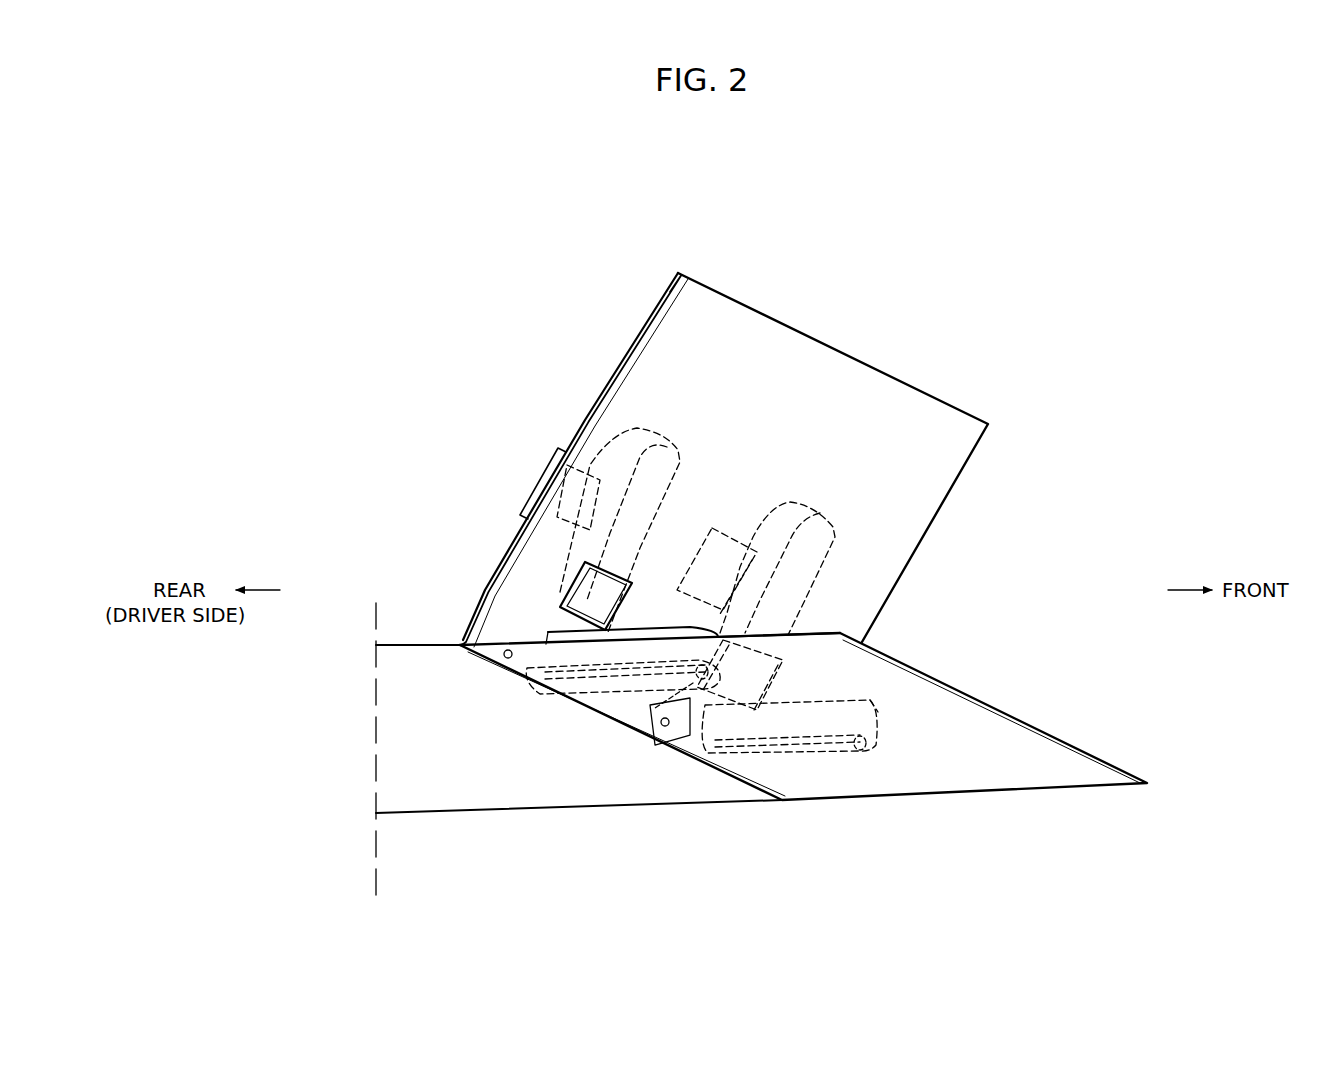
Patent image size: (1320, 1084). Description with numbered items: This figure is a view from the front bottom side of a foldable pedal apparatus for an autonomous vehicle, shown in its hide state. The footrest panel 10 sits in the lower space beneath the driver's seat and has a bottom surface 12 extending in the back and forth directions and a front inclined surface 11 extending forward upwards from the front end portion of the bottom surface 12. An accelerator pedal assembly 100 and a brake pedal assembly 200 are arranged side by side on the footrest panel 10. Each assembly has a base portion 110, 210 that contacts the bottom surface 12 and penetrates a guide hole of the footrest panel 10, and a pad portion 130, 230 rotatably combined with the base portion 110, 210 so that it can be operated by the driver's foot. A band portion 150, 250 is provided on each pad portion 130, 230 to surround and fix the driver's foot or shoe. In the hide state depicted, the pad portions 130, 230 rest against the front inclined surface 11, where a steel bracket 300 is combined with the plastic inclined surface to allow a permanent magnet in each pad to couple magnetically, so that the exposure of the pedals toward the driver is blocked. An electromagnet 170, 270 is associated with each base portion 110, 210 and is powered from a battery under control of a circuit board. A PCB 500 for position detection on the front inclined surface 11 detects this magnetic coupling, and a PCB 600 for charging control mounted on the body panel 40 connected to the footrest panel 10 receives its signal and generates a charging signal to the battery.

The footrest panel 10 is at (700, 262).
The front inclined surface 11 is at (595, 405).
The bottom surface 12 is at (398, 749).
The body panel 40 is at (967, 773).
The accelerator pedal assembly 100 is at (640, 418).
The base portion 110 is at (568, 663).
The pad portion 130 is at (668, 468).
The band portion 150 is at (542, 487).
The electromagnet 170 is at (681, 700).
The brake pedal assembly 200 is at (832, 503).
The base portion 210 is at (752, 722).
The pad portion 230 is at (808, 563).
The band portion 250 is at (720, 562).
The electromagnet 270 is at (850, 740).
The bracket 300 is at (588, 571).
The PCB for position detection 500 is at (585, 606).
The PCB for charging control 600 is at (623, 698).